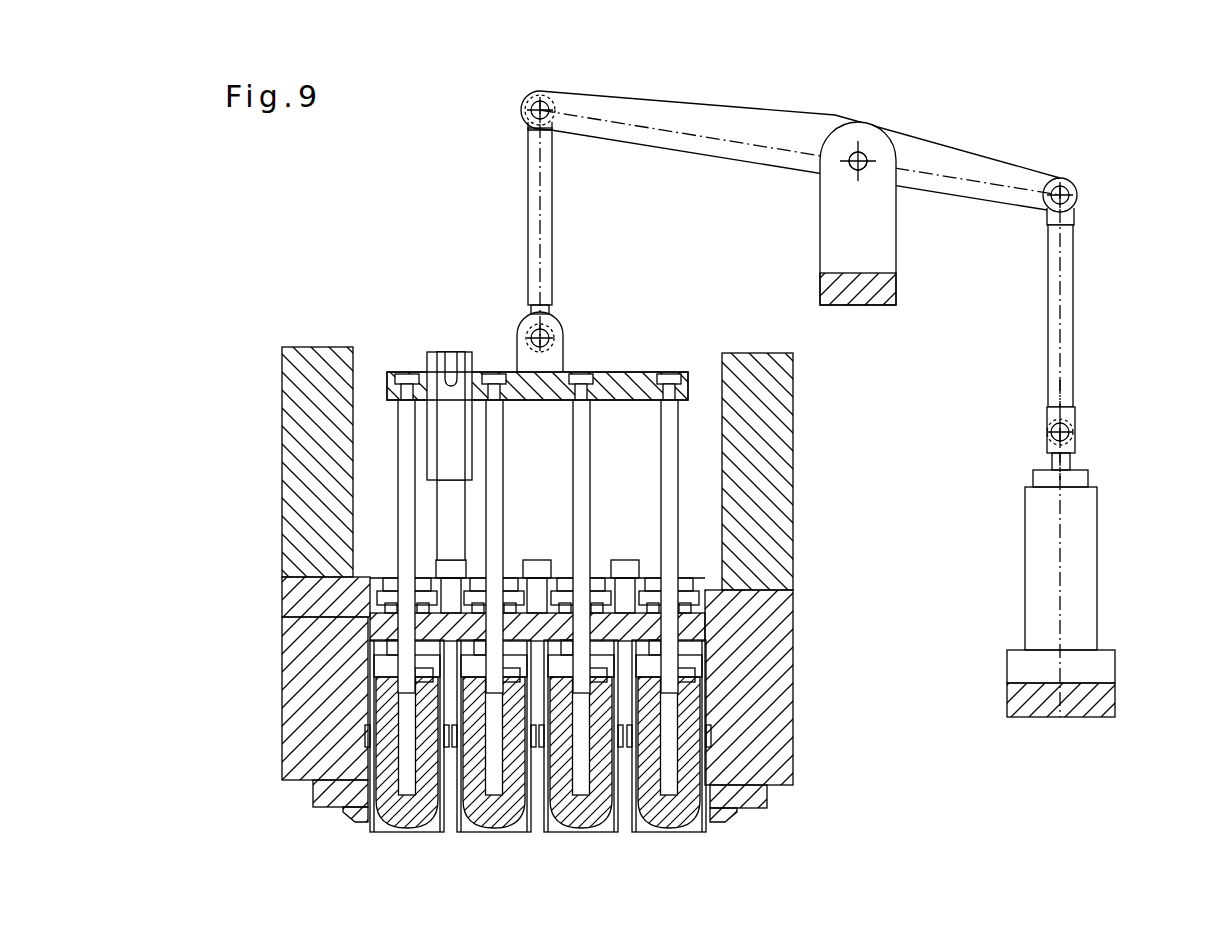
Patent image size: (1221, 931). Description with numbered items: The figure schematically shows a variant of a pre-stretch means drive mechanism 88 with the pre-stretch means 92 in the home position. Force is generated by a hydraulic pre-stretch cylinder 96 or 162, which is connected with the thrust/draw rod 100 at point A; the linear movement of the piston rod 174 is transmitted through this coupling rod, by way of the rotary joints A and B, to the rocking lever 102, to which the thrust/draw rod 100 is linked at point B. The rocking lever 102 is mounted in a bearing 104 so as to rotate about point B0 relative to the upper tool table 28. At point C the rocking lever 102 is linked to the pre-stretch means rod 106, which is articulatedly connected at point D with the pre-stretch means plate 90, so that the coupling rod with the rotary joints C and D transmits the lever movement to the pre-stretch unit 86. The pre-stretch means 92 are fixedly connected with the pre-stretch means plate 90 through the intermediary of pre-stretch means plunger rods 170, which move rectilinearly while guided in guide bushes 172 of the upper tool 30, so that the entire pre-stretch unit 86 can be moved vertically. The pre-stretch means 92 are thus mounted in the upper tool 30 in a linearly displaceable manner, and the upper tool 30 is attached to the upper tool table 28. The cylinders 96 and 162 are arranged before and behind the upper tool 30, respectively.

The upper tool table 28 is at (282, 466).
The upper tool 30 is at (282, 695).
The pre-stretch unit 86 is at (820, 597).
The pre-stretch means drive mechanism 88 is at (460, 250).
The pre-stretch means plate 90 is at (614, 372).
The pre-stretch means 92 is at (645, 833).
The hydraulic pre-stretch cylinder 96 is at (1082, 567).
The hydraulic cylinder 162 is at (1061, 683).
The thrust/draw rod 100 is at (1073, 270).
The rocking lever 102 is at (764, 114).
The bearing 104 is at (866, 237).
The pre-stretch means rod 106 is at (552, 212).
The pre-stretch means plunger rod 170 is at (398, 432).
The guide bush 172 is at (370, 614).
The piston rod 174 is at (1070, 462).
The rotary joint A is at (1072, 430).
The rotary joint B is at (1064, 190).
The pivot point B0 is at (858, 152).
The rotary joint C is at (538, 100).
The rotary joint D is at (548, 335).